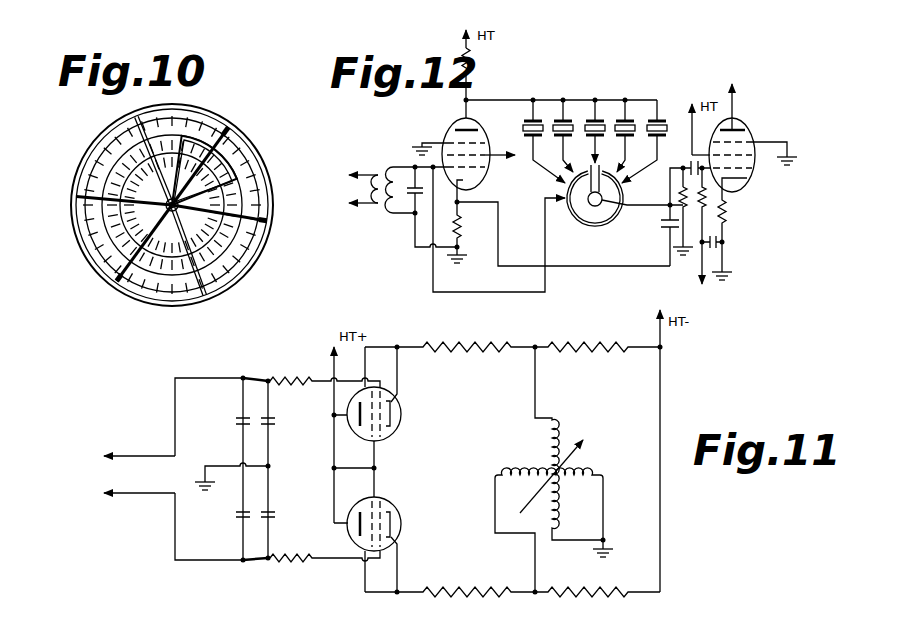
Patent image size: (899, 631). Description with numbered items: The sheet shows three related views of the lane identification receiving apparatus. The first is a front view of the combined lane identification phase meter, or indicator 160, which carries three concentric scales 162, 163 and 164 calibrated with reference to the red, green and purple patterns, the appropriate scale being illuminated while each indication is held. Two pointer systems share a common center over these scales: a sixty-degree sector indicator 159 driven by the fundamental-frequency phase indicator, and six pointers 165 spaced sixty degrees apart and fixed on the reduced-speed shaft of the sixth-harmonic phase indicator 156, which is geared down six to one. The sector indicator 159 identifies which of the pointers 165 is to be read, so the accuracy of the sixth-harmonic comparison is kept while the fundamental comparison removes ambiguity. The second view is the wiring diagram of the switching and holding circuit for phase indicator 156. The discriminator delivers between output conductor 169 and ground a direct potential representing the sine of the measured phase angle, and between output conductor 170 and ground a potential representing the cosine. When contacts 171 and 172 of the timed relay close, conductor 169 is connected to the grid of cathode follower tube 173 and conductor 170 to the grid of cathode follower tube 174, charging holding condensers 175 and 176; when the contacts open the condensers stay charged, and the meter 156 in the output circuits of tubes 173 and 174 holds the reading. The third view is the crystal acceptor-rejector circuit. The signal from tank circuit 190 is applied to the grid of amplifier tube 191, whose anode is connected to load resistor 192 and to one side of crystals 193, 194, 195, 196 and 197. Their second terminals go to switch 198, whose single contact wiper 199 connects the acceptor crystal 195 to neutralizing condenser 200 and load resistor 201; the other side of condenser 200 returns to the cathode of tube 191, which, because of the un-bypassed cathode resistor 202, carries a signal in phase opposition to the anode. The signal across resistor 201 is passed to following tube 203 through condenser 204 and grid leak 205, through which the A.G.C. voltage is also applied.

In FIG. 11, the phase indicator 156 is at (548, 433).
In FIG. 10, the sector indicator 159 is at (243, 158).
In FIG. 10, the indicator 160 is at (224, 116).
In FIG. 10, the scale 162 is at (160, 275).
In FIG. 10, the scale 163 is at (110, 268).
In FIG. 10, the scale 164 is at (80, 250).
In FIG. 10, the pointers 165 is at (112, 148).
In FIG. 11, the output conductor 169 is at (128, 494).
In FIG. 11, the output conductor 170 is at (125, 456).
In FIG. 11, the relay contact 171 is at (252, 562).
In FIG. 11, the relay contact 172 is at (258, 377).
In FIG. 11, the cathode follower tube 173 is at (400, 513).
In FIG. 11, the cathode follower tube 174 is at (401, 412).
In FIG. 11, the holding condenser 175 is at (275, 514).
In FIG. 11, the holding condenser 176 is at (275, 419).
In FIG. 12, the tank circuit 190 is at (380, 209).
In FIG. 12, the amplifier tube 191 is at (463, 150).
In FIG. 12, the load resistor 192 is at (478, 52).
In FIG. 12, the crystal 193 is at (533, 118).
In FIG. 12, the crystal 194 is at (565, 115).
In FIG. 12, the crystal 195 is at (595, 117).
In FIG. 12, the crystal 196 is at (627, 117).
In FIG. 12, the crystal 197 is at (657, 117).
In FIG. 12, the switch 198 is at (585, 225).
In FIG. 12, the contact wiper 199 is at (566, 188).
In FIG. 12, the neutralizing condenser 200 is at (666, 230).
In FIG. 12, the load resistor 201 is at (682, 195).
In FIG. 12, the cathode resistor 202 is at (463, 230).
In FIG. 12, the following tube 203 is at (750, 134).
In FIG. 12, the condenser 204 is at (689, 163).
In FIG. 12, the grid leak 205 is at (723, 200).